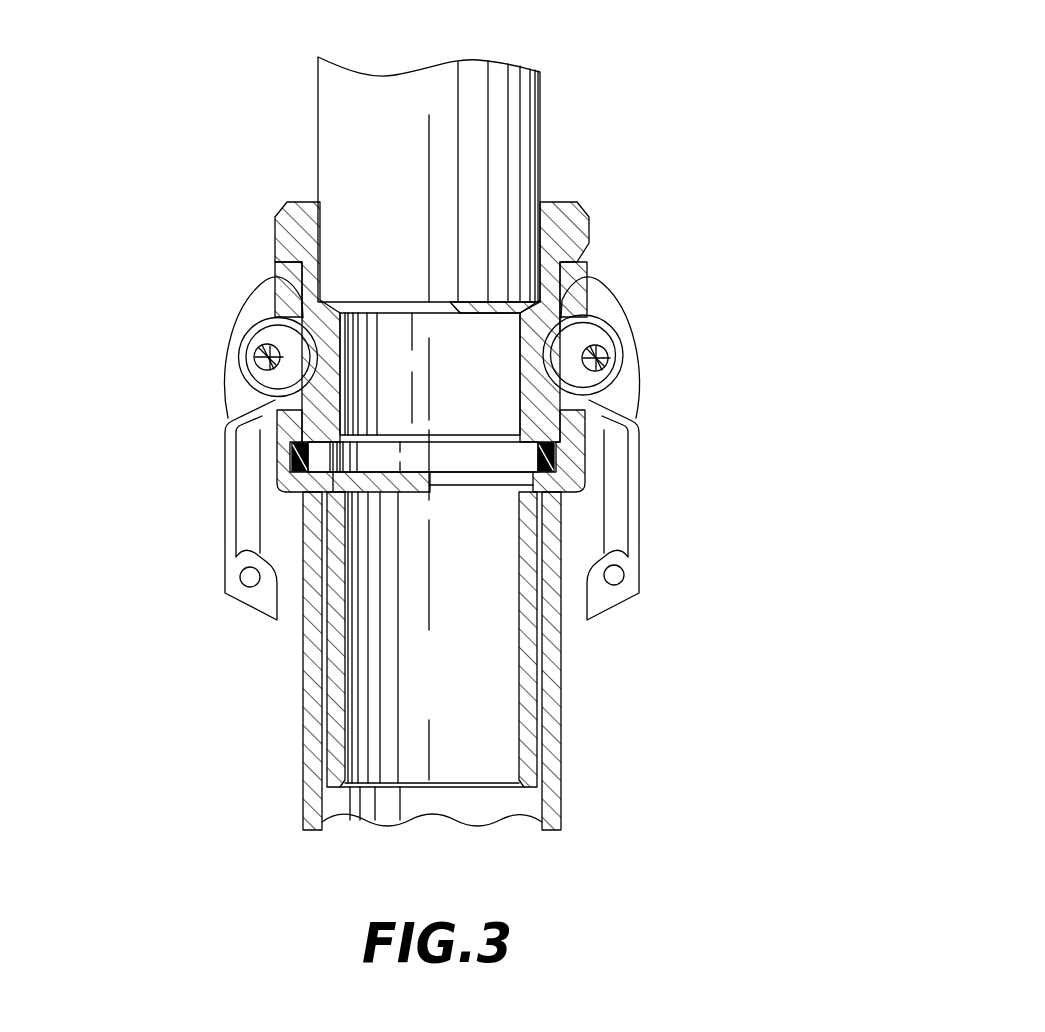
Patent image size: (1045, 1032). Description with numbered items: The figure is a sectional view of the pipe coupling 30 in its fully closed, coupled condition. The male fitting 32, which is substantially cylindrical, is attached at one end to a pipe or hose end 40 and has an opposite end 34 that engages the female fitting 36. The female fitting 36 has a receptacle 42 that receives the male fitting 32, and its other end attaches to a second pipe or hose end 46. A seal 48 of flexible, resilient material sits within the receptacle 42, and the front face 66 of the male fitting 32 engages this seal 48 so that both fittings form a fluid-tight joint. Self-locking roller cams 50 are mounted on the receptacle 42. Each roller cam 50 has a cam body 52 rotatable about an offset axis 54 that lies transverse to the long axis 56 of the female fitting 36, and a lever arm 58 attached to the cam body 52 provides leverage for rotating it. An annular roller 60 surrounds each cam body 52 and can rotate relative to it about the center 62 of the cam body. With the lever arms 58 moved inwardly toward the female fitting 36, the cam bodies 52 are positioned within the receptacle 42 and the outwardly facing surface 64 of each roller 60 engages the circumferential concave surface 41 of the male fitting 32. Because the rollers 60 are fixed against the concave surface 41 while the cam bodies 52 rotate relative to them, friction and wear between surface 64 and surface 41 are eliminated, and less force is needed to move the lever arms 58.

The pipe coupling 30 is at (688, 88).
The male fitting 32 is at (555, 207).
The end 34 is at (320, 430).
The female fitting 36 is at (577, 480).
The pipe or hose end 40 is at (502, 103).
The concave surface 41 is at (568, 325).
The receptacle 42 is at (570, 273).
The pipe or hose end 46 is at (530, 805).
The seal 48 is at (300, 462).
The self-locking roller cam 50 is at (430, 434).
The cam body 52 is at (267, 380).
The offset axis 54 is at (254, 357).
The long axis 56 is at (428, 222).
The lever arm 58 is at (245, 600).
The annular roller 60 is at (240, 346).
The center 62 is at (280, 348).
The outwardly facing surface 64 is at (273, 397).
The front face 66 is at (520, 457).